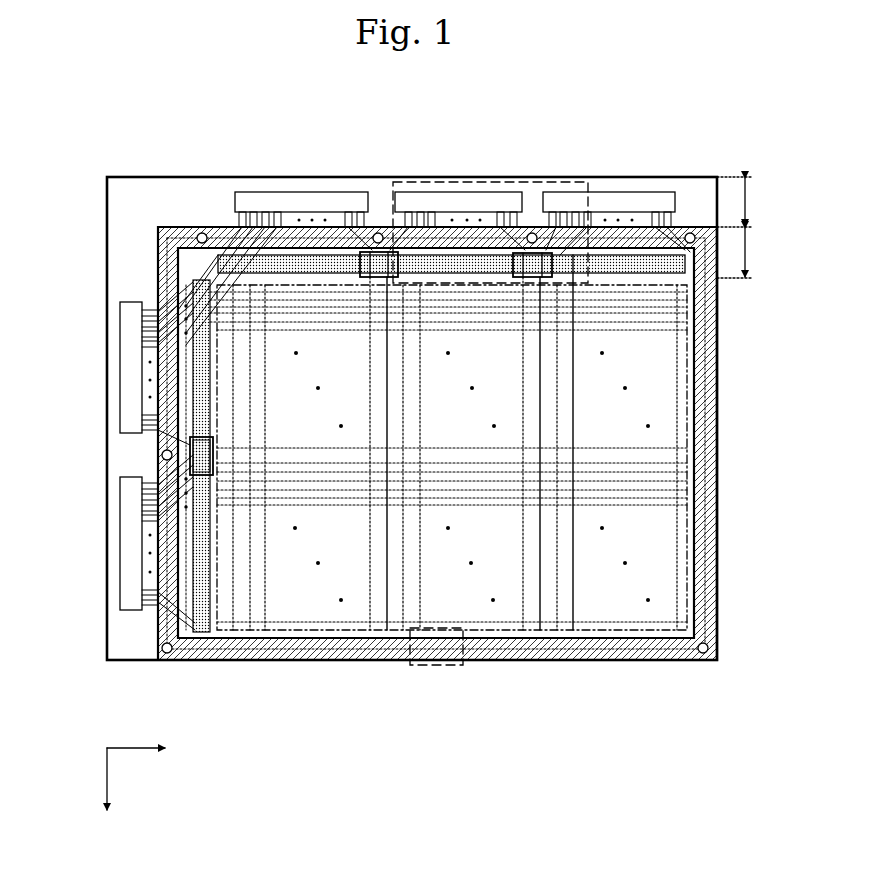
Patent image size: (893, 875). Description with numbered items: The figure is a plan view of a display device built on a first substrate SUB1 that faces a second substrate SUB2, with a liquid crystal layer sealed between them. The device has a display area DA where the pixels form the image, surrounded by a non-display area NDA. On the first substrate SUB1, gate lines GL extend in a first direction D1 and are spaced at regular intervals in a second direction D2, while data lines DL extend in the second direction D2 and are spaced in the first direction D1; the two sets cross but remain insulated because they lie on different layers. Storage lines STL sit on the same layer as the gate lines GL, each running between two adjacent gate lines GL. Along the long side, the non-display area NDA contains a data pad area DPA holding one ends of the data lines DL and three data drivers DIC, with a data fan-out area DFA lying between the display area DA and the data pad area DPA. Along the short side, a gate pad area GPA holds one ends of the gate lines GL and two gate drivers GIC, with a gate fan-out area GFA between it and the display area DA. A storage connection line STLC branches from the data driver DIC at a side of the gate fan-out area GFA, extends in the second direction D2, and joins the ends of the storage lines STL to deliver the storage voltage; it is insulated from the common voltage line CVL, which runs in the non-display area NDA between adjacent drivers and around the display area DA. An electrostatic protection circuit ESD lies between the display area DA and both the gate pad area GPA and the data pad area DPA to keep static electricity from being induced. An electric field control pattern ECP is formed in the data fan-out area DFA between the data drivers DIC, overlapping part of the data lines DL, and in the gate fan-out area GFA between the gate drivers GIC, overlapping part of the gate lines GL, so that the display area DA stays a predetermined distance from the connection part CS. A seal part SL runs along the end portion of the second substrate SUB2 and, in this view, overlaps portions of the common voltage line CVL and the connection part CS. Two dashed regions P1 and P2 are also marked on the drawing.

The first substrate SUB1 is at (107, 228).
The second substrate SUB2 is at (158, 243).
The storage connection line STLC is at (158, 262).
The data driver DIC is at (273, 200).
The electric field control pattern ECP is at (345, 267).
The connection part CS is at (385, 250).
The first portion P1 is at (515, 182).
The electrostatic protection circuit ESD is at (640, 260).
The data pad area DPA is at (750, 202).
The data fan-out area DFA is at (750, 253).
The gate driver GIC is at (120, 338).
The gate lines GL is at (305, 323).
The storage lines STL is at (343, 330).
The data lines DL is at (267, 404).
The display area DA is at (687, 425).
The common voltage line CVL is at (705, 488).
The non-display area NDA is at (715, 548).
The gate pad area GPA is at (107, 660).
The gate fan-out area GFA is at (157, 660).
The seal part SL is at (325, 660).
The second portion P2 is at (443, 667).
The first direction D1 is at (150, 749).
The second direction D2 is at (107, 792).